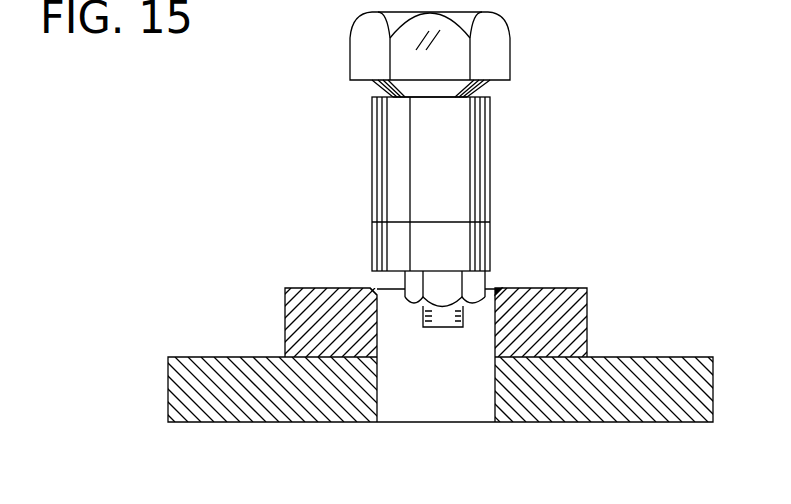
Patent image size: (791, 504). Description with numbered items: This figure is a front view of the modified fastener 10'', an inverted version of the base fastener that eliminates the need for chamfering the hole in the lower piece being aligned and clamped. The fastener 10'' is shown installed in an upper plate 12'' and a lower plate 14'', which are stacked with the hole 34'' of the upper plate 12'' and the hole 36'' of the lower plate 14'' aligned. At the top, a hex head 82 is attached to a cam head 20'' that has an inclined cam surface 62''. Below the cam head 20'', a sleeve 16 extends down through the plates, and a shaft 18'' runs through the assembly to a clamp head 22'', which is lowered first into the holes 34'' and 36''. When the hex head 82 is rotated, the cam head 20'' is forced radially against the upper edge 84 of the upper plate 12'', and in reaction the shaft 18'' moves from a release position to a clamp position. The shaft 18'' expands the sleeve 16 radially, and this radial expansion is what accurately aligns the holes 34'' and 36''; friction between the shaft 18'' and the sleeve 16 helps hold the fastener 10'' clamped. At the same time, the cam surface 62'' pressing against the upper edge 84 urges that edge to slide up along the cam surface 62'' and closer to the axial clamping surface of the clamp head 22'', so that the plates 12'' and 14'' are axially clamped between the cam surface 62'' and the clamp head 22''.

The modified fastener 10'' is at (692, 86).
The hex head 82 is at (511, 41).
The cam surface 62'' is at (335, 95).
The cam head 20'' is at (493, 94).
The sleeve 16 is at (490, 167).
The clamp head 22'' is at (387, 238).
The shaft 18'' is at (445, 342).
The upper edge 84 is at (494, 288).
The hole of upper plate 34'' is at (318, 321).
The upper plate 12'' is at (544, 296).
The lower plate 14'' is at (441, 365).
The hole of lower plate 36'' is at (403, 418).